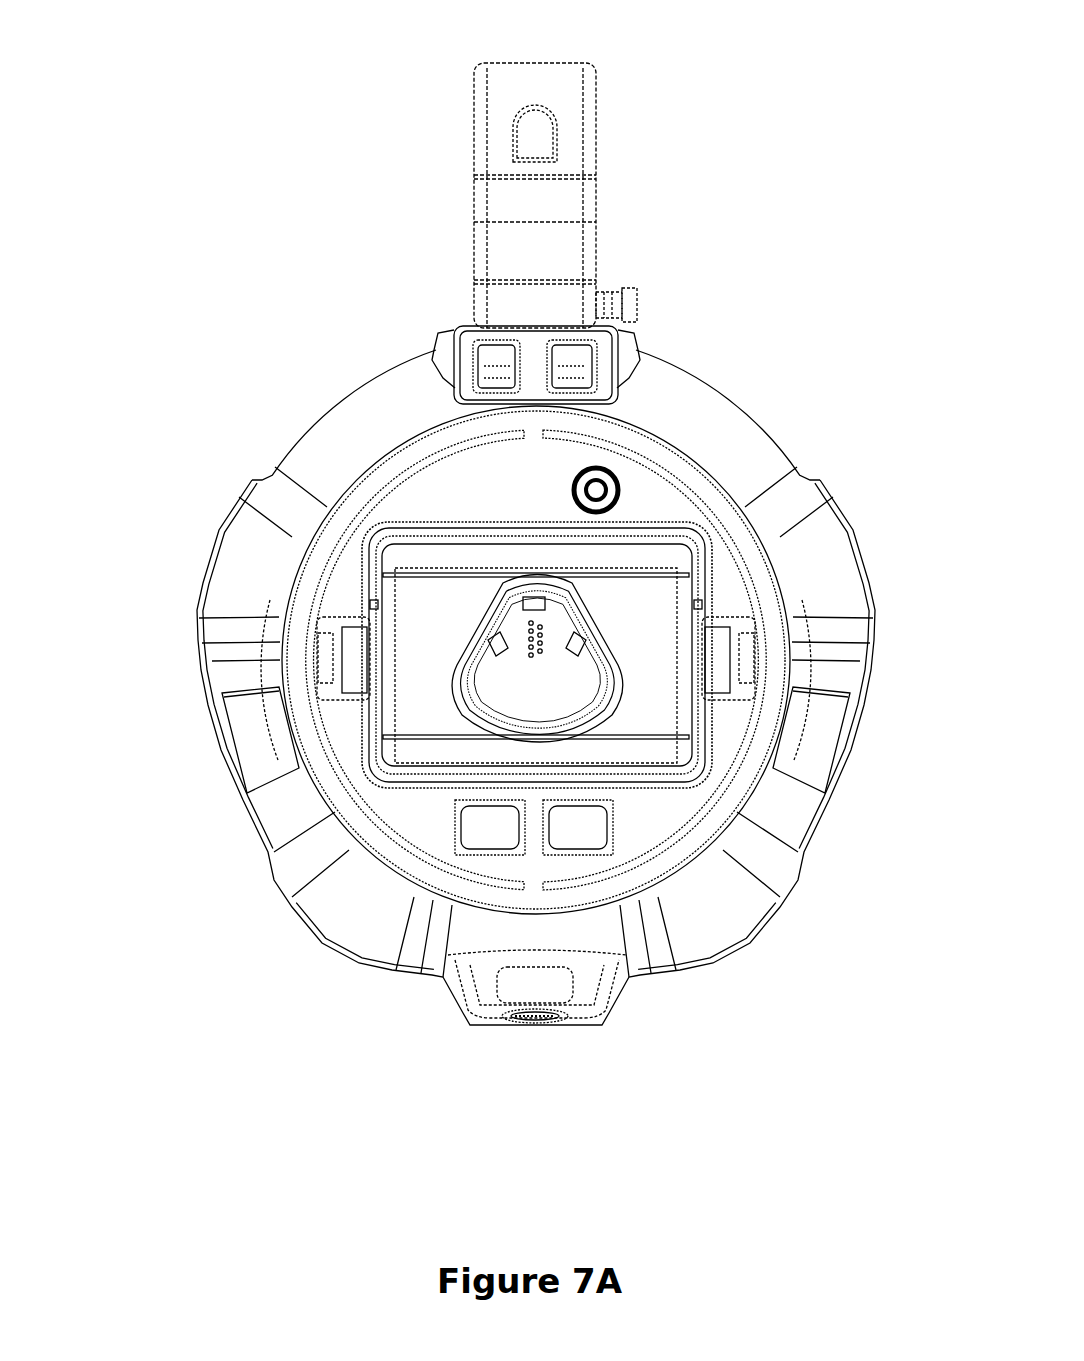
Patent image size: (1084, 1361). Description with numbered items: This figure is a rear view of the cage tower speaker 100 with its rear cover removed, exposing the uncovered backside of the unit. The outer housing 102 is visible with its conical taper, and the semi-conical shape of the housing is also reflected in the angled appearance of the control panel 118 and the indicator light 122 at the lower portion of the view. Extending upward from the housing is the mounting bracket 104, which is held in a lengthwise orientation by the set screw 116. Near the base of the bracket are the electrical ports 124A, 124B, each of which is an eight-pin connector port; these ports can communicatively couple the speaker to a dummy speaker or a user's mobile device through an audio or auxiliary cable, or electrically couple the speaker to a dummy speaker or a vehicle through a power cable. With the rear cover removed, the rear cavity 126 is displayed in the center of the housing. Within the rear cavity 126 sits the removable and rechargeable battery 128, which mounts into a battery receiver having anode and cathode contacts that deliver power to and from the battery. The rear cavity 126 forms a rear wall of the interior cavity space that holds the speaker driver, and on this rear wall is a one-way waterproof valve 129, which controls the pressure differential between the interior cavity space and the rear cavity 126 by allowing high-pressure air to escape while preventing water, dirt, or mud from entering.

The cage tower speaker 100 is at (153, 194).
The outer housing 102 is at (772, 458).
The mounting bracket 104 is at (578, 98).
The set screw 116 is at (632, 318).
The control panel 118 is at (582, 1012).
The indicator light 122 is at (537, 1020).
The electrical port 124A is at (487, 370).
The electrical port 124B is at (577, 362).
The rear cavity 126 is at (462, 500).
The removable and rechargeable battery 128 is at (412, 600).
The one-way waterproof valve 129 is at (600, 468).